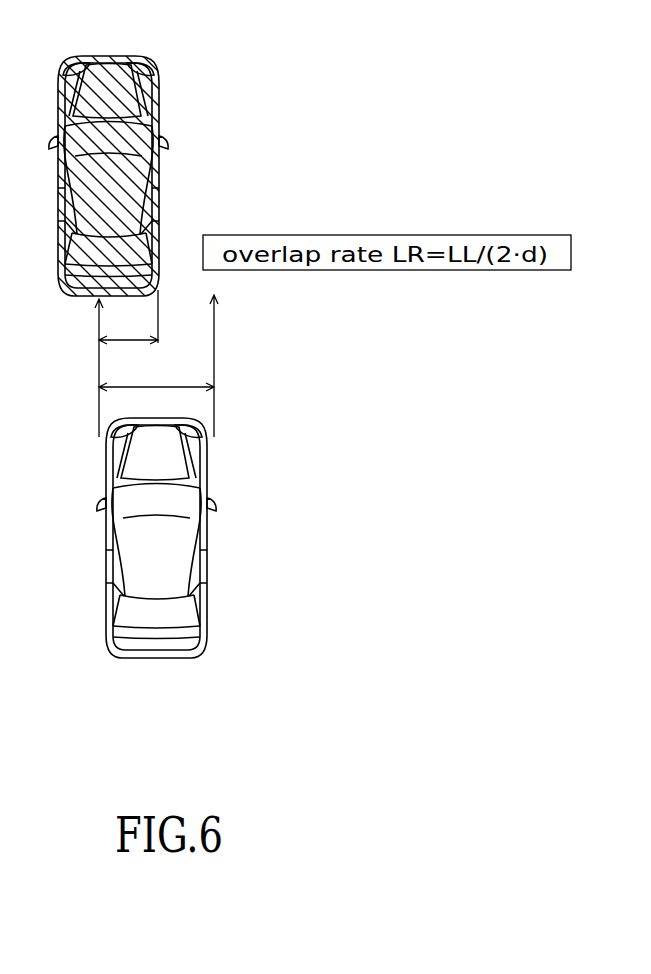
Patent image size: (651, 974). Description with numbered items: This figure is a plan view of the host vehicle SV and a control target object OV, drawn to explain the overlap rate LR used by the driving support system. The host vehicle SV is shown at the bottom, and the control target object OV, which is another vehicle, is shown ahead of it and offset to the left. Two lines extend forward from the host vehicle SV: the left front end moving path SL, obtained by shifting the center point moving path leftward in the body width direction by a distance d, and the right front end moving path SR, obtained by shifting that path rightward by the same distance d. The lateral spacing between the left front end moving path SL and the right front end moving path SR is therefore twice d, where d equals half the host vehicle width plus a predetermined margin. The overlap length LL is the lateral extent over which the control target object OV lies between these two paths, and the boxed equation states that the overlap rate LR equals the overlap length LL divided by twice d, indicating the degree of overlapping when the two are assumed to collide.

The control target object OV is at (158, 183).
The host vehicle SV is at (208, 538).
The left front end moving path SL is at (98, 368).
The right front end moving path SR is at (215, 362).
The overlap length LL is at (128, 327).